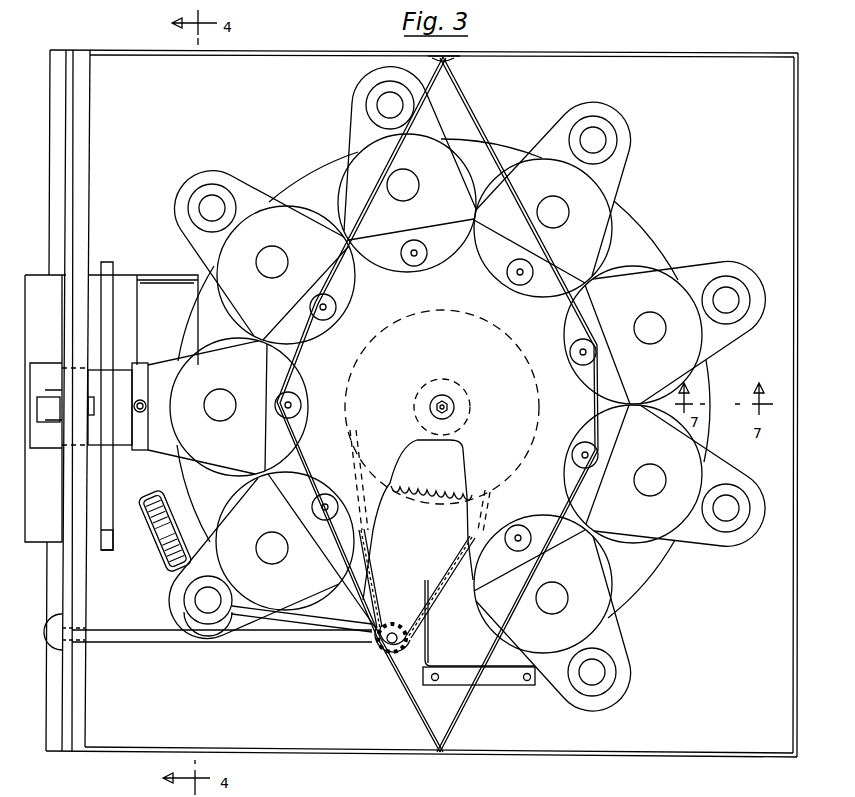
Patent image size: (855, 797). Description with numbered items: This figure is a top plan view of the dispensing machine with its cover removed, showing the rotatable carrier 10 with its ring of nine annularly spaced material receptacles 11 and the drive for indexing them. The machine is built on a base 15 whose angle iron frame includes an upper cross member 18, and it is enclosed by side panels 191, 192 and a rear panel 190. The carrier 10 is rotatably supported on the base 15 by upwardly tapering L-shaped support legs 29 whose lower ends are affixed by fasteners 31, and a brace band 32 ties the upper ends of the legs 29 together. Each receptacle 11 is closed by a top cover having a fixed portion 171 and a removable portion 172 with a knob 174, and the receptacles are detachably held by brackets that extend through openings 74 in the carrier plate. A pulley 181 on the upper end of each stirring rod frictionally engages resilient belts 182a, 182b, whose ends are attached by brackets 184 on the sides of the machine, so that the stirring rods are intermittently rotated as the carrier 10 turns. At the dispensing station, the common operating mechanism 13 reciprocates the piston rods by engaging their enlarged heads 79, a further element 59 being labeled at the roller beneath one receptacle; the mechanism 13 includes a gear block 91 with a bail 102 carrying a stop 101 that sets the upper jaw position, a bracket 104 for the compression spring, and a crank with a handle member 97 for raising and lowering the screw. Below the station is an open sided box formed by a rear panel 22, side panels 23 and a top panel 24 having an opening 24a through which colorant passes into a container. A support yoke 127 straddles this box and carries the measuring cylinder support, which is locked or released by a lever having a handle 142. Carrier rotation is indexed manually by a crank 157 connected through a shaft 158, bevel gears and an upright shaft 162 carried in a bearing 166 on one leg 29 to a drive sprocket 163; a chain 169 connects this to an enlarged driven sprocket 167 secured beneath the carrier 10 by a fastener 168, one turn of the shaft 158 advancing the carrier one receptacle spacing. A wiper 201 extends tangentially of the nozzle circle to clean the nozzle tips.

The rotatable carrier 10 is at (668, 250).
The material receptacle 11 is at (664, 332).
The operating mechanism 13 is at (122, 362).
The base 15 is at (536, 735).
The upper cross member 18 is at (78, 705).
The rear panel 22 is at (193, 287).
The side panels 23 is at (162, 275).
The top panel 24 is at (122, 277).
The opening 24a is at (137, 290).
The support legs 29 is at (503, 670).
The fasteners 31 is at (435, 678).
The brace band 32 is at (348, 630).
The roller ring 59 is at (207, 620).
The openings 74 is at (257, 574).
The enlarged head 79 is at (206, 600).
The gear block 91 is at (125, 387).
The handle member 97 is at (45, 408).
The stop 101 is at (148, 402).
The bail 102 is at (143, 450).
The bracket 104 is at (92, 402).
The support yoke 127 is at (110, 550).
The handle 142 is at (43, 372).
The crank 157 is at (55, 640).
The shaft 158 is at (268, 635).
The upright shaft 162 is at (392, 630).
The drive sprocket 163 is at (387, 658).
The bearing 166 is at (410, 597).
The driven sprocket 167 is at (448, 468).
The fastener 168 is at (447, 403).
The chain 169 is at (365, 553).
The fixed portion 171 is at (340, 283).
The removable portion 172 is at (384, 181).
The knob 174 is at (555, 203).
The pulley 181 is at (430, 264).
The resilient belt 182a is at (377, 182).
The resilient belt 182b is at (485, 130).
The brackets 184 is at (455, 60).
The rear panel 190 is at (792, 568).
The side panel 191 is at (597, 752).
The side panel 192 is at (572, 48).
The wiper 201 is at (181, 512).